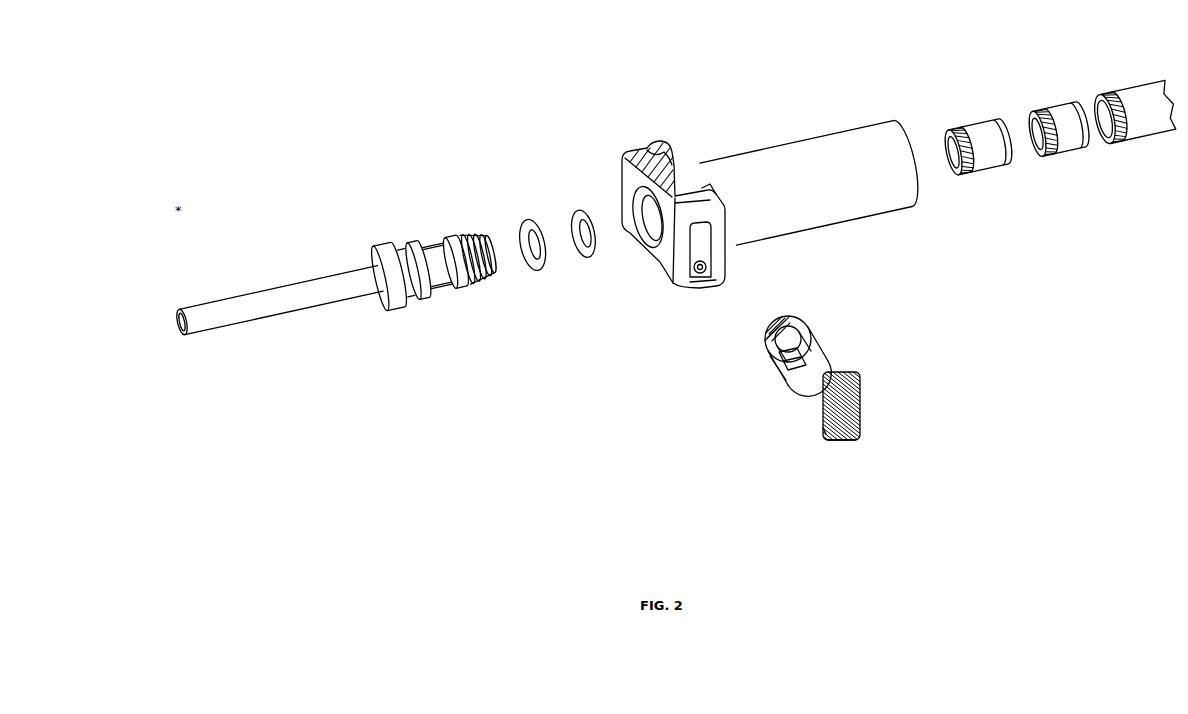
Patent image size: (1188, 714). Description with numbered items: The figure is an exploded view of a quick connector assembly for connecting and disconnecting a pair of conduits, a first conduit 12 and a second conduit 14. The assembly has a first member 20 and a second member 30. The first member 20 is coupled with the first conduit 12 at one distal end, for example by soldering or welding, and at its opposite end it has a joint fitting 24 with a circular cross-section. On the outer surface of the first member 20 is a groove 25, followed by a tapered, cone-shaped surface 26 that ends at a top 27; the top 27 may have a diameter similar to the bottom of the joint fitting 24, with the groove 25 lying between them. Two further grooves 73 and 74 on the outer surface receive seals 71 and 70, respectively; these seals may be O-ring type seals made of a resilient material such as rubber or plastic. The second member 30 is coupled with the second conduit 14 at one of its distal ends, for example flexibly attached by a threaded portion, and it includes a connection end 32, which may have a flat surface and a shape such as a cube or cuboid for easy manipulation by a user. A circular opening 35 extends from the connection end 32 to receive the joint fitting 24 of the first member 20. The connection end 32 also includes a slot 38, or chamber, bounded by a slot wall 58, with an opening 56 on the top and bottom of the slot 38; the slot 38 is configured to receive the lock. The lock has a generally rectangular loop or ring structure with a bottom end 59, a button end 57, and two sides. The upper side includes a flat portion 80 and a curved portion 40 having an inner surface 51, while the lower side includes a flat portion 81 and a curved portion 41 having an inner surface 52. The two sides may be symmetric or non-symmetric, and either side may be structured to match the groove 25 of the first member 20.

The first conduit 12 is at (278, 295).
The first member 20 is at (330, 294).
The joint fitting 24 is at (378, 245).
The groove 25 is at (401, 240).
The tapered surface 26 is at (426, 242).
The top 27 is at (428, 296).
The groove 74 is at (456, 238).
The groove 73 is at (478, 284).
The seal 70 is at (522, 218).
The seal 71 is at (573, 210).
The second member 30 is at (800, 163).
The connection end 32 is at (659, 217).
The opening 35 is at (643, 248).
The slot 38 is at (699, 280).
The opening 56 is at (686, 152).
The slot wall 58 is at (652, 146).
The second conduit 14 is at (1123, 100).
The curved portion 40 is at (771, 378).
The curved portion 41 is at (779, 378).
The inner surface 51 is at (795, 340).
The inner surface 52 is at (798, 386).
The bottom end 59 is at (766, 328).
The flat portion 80 is at (835, 404).
The flat portion 81 is at (816, 416).
The button end 57 is at (847, 442).